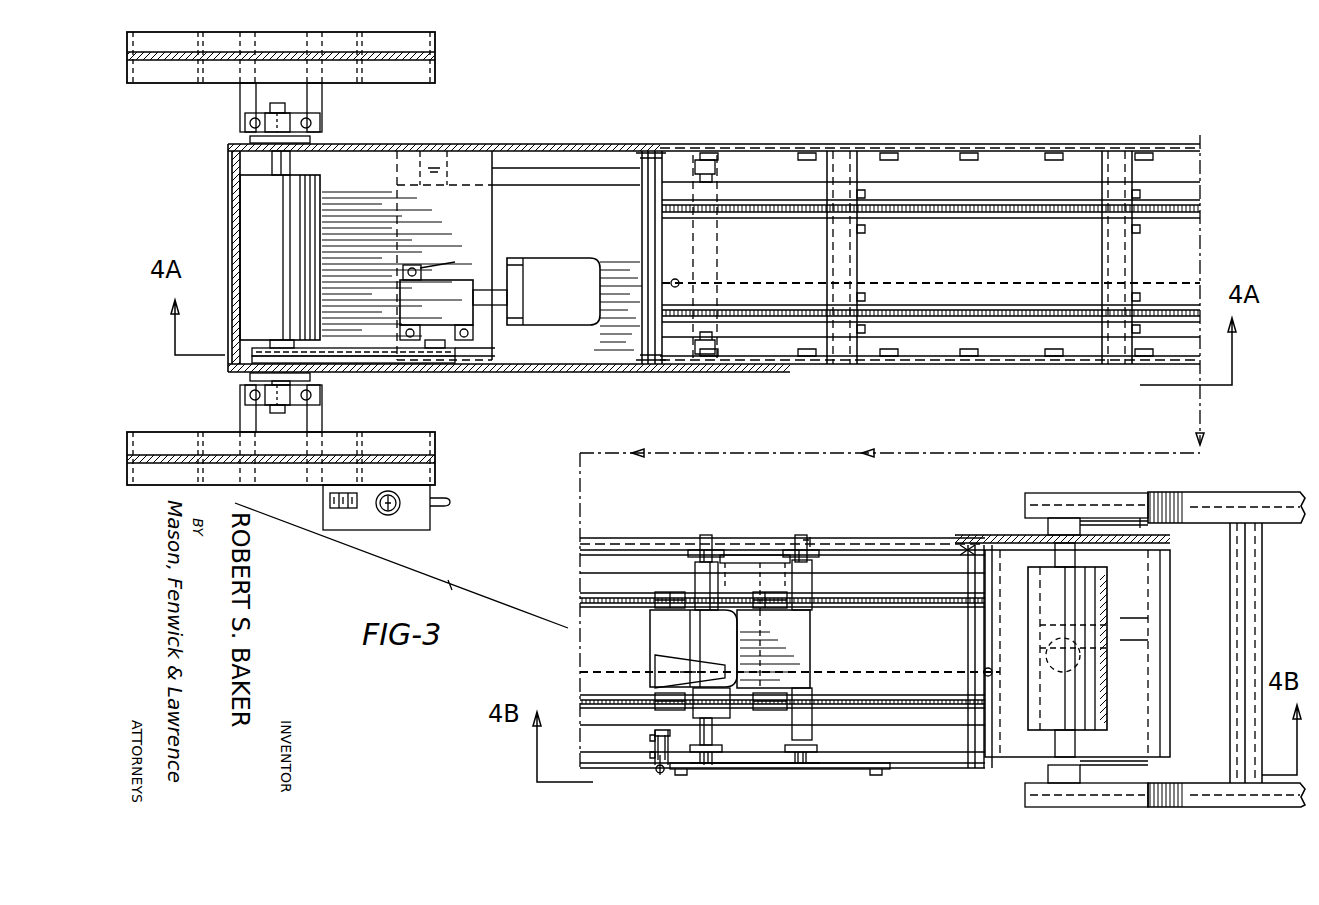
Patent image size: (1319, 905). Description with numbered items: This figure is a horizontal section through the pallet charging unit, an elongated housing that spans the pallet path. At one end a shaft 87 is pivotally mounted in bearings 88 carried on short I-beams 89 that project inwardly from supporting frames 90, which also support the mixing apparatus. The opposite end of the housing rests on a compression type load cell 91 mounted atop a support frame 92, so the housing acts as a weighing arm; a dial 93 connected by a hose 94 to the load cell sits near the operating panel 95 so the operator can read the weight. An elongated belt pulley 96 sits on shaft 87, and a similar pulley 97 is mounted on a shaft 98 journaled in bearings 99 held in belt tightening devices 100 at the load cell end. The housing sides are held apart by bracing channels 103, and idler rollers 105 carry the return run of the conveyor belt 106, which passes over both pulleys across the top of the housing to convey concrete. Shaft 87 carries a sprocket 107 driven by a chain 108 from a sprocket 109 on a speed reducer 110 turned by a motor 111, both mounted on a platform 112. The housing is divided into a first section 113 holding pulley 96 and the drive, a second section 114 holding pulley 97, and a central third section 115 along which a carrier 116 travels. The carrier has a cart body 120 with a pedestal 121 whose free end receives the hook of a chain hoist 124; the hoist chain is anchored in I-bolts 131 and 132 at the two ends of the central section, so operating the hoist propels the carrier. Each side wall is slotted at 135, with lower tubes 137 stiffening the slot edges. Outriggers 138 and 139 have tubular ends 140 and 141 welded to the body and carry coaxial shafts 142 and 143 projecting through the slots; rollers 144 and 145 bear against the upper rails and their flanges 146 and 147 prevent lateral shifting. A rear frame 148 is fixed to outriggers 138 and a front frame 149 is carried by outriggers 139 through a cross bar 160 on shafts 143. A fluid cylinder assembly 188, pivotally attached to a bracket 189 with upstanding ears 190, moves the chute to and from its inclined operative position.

The shaft 87 is at (291, 166).
The bearings 88 is at (301, 124).
The short I-beams 89 is at (240, 99).
The supporting frames 90 is at (435, 66).
The compression type load cell 91 is at (1096, 648).
The support frame 92 is at (1223, 492).
The dial 93 is at (386, 513).
The hose 94 is at (449, 496).
The operating panel 95 is at (430, 516).
The elongated belt pulley 96 is at (252, 210).
The pulley 97 is at (1096, 595).
The shaft 98 is at (1058, 586).
The bearings 99 is at (1062, 518).
The belt tightening devices 100 is at (1108, 518).
The bracing channels 103 is at (860, 160).
The idler rollers 105 is at (720, 161).
The conveyor belt 106 is at (574, 178).
The sprocket 107 is at (328, 348).
The chain 108 is at (380, 363).
The sprocket 109 is at (468, 352).
The speed reducer 110 is at (448, 307).
The motor 111 is at (560, 272).
The platform 112 is at (484, 220).
The first section 113 is at (487, 144).
The second section 114 is at (978, 535).
The third section 115 is at (636, 538).
The carrier 116 is at (818, 627).
The cart body 120 is at (810, 656).
The pedestal 121 is at (656, 669).
The chain hoist 124 is at (690, 628).
The I-bolt 131 is at (681, 281).
The I-bolt 132 is at (922, 672).
The slots 135 is at (984, 365).
The lower tubes 137 is at (1006, 144).
The outriggers 138 is at (694, 574).
The outriggers 139 is at (786, 718).
The tubular ends 140 is at (684, 593).
The tubular ends 141 is at (696, 700).
The shafts 142 is at (704, 535).
The shafts 143 is at (792, 762).
The rollers 144 is at (718, 551).
The rollers 145 is at (811, 747).
The flanges 146 is at (780, 562).
The flanges 147 is at (816, 774).
The rear frame 148 is at (805, 515).
The front frame 149 is at (790, 768).
The cross bar 160 is at (878, 769).
The fluid cylinder assembly 188 is at (652, 765).
The bracket 189 is at (654, 746).
The upstanding ears 190 is at (670, 728).